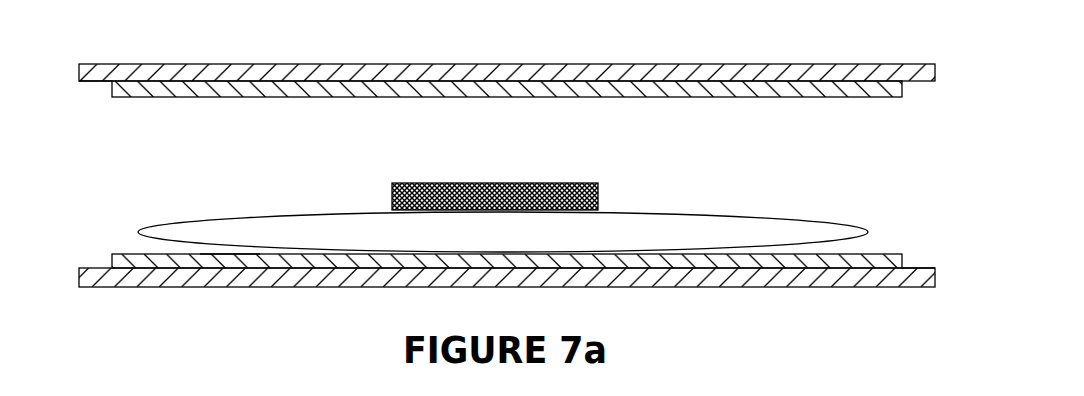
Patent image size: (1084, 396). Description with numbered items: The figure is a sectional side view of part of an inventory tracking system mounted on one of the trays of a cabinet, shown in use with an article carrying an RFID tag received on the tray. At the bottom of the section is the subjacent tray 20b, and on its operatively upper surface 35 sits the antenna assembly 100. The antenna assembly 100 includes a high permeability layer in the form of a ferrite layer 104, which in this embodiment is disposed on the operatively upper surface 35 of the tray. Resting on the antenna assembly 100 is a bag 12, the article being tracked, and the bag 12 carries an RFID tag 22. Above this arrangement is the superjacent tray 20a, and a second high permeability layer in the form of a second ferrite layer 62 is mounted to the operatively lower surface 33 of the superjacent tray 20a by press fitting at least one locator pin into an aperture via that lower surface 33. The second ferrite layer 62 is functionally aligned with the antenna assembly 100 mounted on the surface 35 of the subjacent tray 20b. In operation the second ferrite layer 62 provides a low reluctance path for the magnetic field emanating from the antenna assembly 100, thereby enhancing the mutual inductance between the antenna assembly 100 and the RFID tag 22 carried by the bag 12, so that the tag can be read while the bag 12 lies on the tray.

The superjacent tray 20a is at (158, 63).
The operatively lower surface 33 is at (98, 82).
The second ferrite layer 62 is at (872, 97).
The RFID tag 22 is at (573, 183).
The bag 12 is at (823, 222).
The antenna assembly 100 is at (130, 253).
The ferrite layer 104 is at (225, 260).
The operatively upper surface 35 is at (920, 268).
The subjacent tray 20b is at (800, 288).